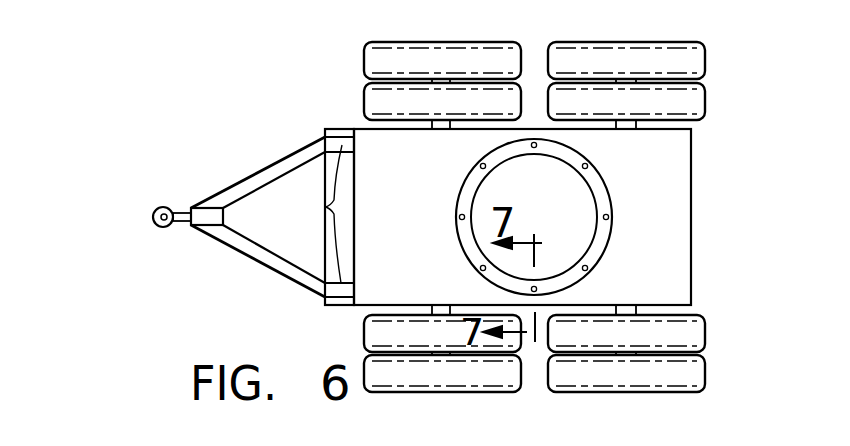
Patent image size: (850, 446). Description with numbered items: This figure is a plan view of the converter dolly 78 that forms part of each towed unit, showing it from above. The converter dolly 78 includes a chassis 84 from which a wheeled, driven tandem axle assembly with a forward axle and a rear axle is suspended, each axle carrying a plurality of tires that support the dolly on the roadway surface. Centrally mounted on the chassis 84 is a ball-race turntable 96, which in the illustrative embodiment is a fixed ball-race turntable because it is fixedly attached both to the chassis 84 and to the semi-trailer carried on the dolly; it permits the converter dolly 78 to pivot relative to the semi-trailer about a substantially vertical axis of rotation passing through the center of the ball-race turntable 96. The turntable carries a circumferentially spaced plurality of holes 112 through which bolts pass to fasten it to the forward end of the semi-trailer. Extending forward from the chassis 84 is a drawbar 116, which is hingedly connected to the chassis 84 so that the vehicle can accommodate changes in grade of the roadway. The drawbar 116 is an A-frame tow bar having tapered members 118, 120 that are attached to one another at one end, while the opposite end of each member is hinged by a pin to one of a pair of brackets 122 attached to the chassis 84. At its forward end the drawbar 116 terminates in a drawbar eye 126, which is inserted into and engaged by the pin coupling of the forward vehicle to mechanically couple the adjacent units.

The converter dolly 78 is at (718, 188).
The chassis 84 is at (692, 232).
The ball-race turntable 96 is at (473, 180).
The holes 112 is at (606, 214).
The drawbar 116 is at (253, 212).
The tapered member 118 is at (283, 157).
The tapered member 120 is at (273, 273).
The brackets 122 is at (326, 207).
The drawbar eye 126 is at (162, 228).